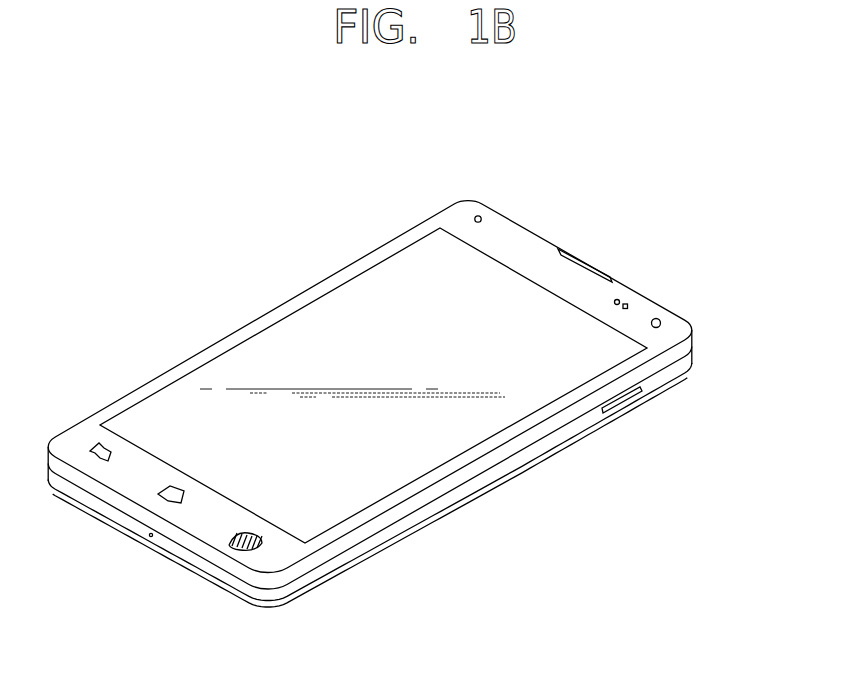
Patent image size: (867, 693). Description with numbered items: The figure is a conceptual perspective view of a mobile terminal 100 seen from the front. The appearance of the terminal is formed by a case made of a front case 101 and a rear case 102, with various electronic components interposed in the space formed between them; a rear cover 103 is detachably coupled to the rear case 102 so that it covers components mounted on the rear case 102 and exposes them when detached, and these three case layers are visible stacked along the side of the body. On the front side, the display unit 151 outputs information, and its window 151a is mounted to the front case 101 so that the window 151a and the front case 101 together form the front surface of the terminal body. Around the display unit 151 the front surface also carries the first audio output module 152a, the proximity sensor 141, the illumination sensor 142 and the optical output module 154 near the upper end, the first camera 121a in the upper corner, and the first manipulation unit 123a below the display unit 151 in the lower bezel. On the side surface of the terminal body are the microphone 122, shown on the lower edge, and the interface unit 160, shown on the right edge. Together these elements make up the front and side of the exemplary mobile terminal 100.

The mobile terminal 100 is at (263, 234).
The front case 101 is at (693, 341).
The rear case 102 is at (689, 360).
The rear cover 103 is at (684, 378).
The first camera 121a is at (661, 321).
The microphone 122 is at (150, 537).
The first manipulation unit 123a is at (235, 541).
The proximity sensor 141 is at (628, 305).
The illumination sensor 142 is at (618, 300).
The display unit 151 is at (242, 375).
The window 151a is at (402, 285).
The first audio output module 152a is at (580, 262).
The optical output module 154 is at (482, 218).
The interface unit 160 is at (620, 402).